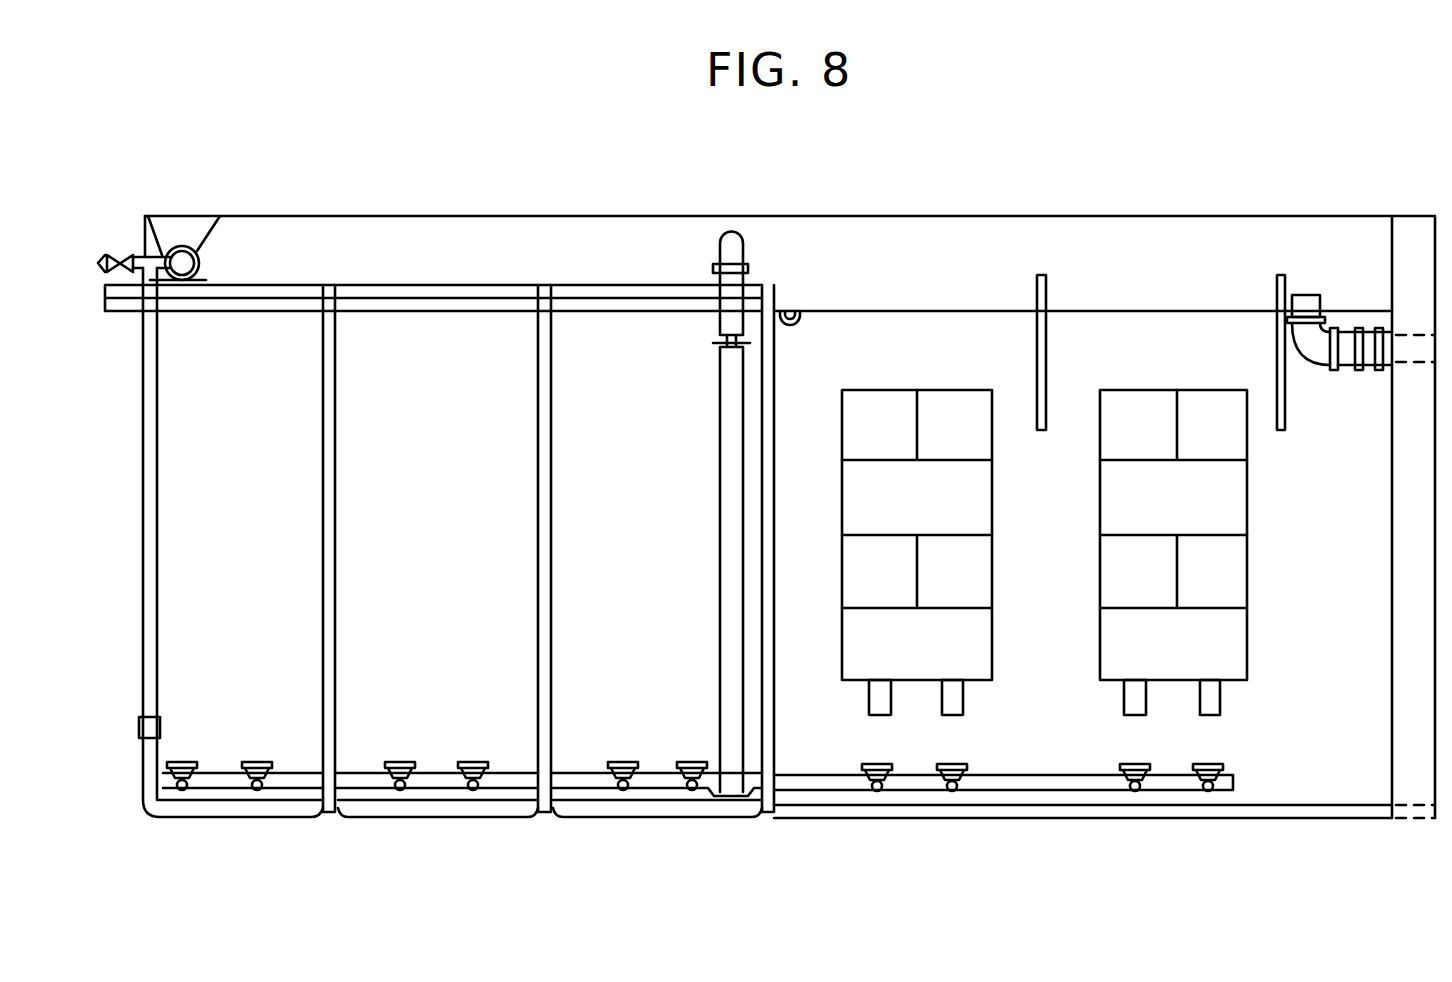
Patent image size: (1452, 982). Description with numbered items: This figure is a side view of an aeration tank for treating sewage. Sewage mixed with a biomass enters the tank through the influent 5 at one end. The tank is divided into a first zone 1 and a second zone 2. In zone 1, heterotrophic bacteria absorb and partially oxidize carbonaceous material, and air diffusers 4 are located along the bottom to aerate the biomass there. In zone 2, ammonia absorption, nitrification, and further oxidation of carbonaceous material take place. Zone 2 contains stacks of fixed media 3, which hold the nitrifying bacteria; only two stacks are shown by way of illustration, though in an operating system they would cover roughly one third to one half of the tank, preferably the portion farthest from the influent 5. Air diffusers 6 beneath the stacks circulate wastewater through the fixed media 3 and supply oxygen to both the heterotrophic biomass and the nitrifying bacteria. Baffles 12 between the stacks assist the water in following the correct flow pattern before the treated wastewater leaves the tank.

The zone 1 is at (148, 213).
The zone 2 is at (740, 212).
The stacks of fixed media 3 is at (880, 390).
The air diffusers 4 is at (257, 790).
The influent 5 is at (200, 252).
The air diffusers 6 is at (952, 790).
The baffles 12 is at (1276, 286).